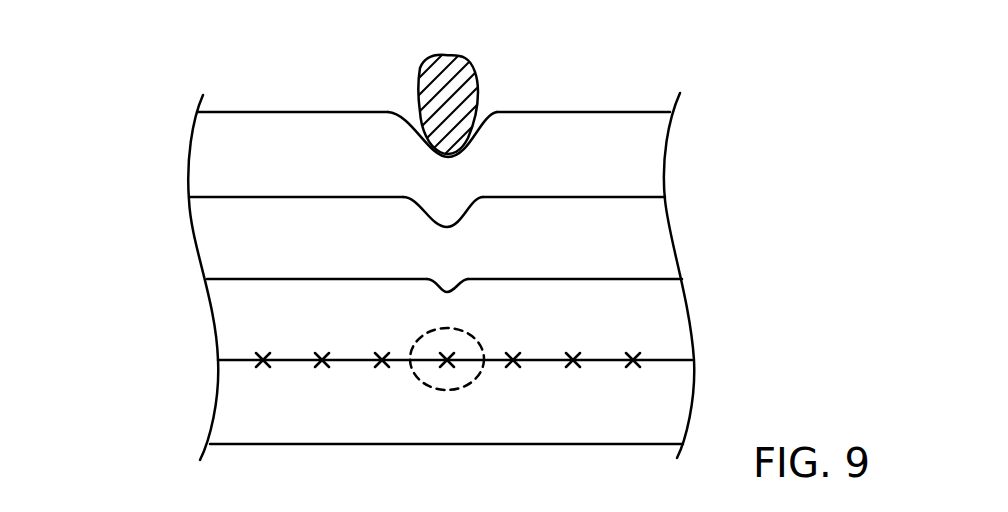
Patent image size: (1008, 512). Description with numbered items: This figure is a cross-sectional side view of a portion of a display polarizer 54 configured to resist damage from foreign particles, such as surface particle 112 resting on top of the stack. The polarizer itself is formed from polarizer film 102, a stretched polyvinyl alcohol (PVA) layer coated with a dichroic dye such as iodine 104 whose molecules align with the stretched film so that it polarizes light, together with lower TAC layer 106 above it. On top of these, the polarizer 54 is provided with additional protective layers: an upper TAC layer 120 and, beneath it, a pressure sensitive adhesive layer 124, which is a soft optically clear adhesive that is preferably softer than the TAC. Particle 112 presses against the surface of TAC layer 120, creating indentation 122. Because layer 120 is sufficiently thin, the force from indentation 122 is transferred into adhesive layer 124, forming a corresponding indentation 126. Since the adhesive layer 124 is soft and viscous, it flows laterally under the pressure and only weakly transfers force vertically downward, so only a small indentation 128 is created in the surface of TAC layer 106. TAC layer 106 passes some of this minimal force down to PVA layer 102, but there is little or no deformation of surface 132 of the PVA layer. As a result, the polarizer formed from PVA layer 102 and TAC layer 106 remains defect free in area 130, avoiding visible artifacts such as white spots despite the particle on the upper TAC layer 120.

The polarizer 54 is at (108, 209).
The polarizer film 102 is at (675, 408).
The iodine 104 is at (322, 365).
The TAC layer 106 is at (675, 318).
The surface particle 112 is at (470, 87).
The TAC layer 120 is at (648, 157).
The indentation 122 is at (463, 155).
The pressure sensitive adhesive layer 124 is at (648, 233).
The indentation 126 is at (460, 220).
The indentation 128 is at (428, 300).
The area 130 is at (477, 337).
The surface 132 is at (495, 362).